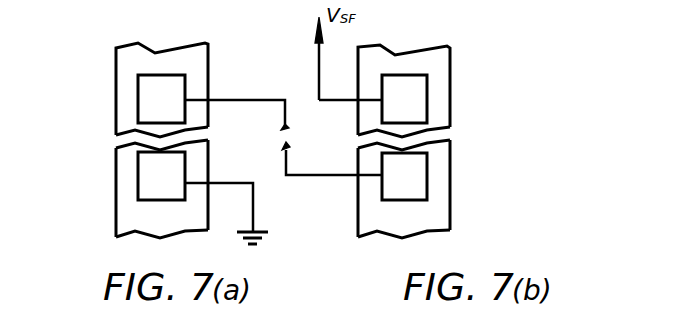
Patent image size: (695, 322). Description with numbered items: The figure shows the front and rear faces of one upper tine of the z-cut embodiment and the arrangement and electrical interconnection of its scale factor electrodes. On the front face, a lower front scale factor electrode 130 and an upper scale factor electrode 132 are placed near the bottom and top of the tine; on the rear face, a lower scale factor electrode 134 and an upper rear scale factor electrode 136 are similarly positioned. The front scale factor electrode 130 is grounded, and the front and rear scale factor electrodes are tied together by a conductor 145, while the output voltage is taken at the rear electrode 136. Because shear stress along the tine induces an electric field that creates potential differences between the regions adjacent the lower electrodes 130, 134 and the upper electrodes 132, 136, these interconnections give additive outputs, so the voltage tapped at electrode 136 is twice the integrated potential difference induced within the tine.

The upper scale factor electrode 132 is at (145, 83).
The front scale factor electrode 130 is at (150, 176).
The conductor 145 is at (232, 100).
The rear scale factor electrode 136 is at (415, 105).
The lower scale factor electrode 134 is at (410, 183).